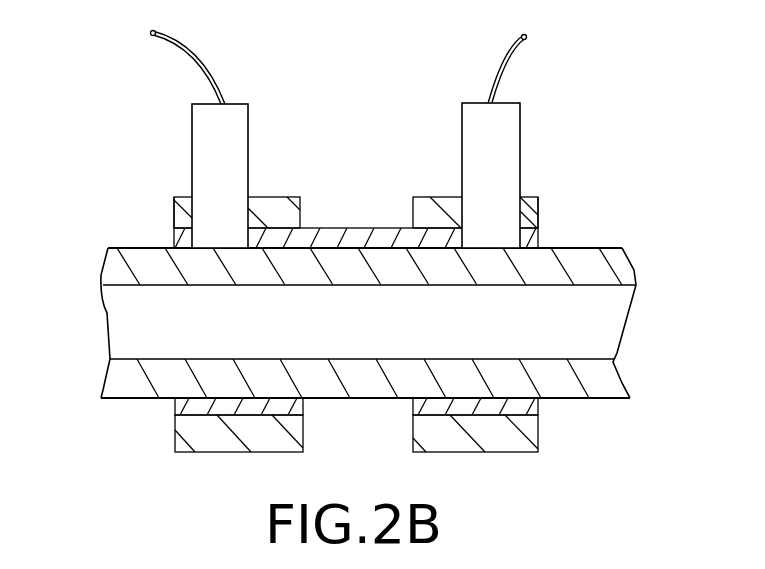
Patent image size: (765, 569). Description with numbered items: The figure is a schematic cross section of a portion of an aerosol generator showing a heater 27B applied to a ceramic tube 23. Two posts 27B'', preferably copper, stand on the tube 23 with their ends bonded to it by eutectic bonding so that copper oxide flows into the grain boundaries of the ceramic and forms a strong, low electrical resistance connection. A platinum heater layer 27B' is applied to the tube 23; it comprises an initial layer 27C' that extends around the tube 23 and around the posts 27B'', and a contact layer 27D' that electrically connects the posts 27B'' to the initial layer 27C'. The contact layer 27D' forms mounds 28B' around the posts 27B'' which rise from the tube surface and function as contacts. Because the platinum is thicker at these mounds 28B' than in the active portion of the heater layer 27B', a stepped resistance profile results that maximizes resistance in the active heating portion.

The tube 23 is at (625, 264).
The heater 27B is at (372, 140).
The platinum heater layer 27B' is at (591, 209).
The posts 27B'' is at (374, 140).
The initial layer 27C' is at (304, 223).
The contact layer 27D' is at (112, 181).
The mounds 28B' is at (373, 168).